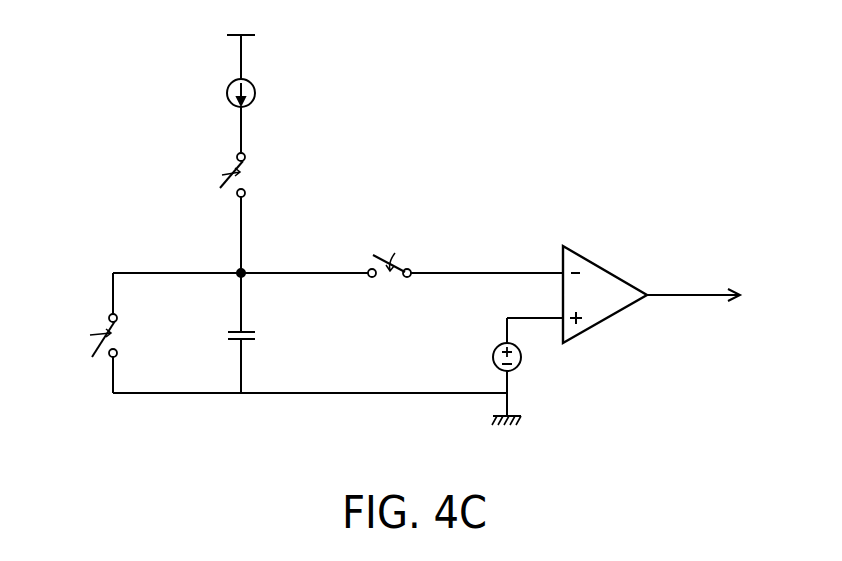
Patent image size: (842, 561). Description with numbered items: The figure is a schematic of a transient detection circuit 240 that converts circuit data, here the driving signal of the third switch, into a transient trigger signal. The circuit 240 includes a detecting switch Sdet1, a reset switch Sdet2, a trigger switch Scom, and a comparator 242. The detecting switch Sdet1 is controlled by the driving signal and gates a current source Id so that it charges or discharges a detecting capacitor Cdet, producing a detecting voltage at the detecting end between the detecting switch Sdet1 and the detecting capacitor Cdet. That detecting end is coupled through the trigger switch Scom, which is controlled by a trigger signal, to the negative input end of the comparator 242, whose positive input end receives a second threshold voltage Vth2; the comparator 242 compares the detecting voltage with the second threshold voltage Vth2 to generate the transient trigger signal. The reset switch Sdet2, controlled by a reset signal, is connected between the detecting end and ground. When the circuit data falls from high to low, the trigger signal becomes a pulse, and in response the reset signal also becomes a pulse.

The transient detection circuit 240 is at (110, 54).
The comparator 242 is at (608, 268).
The current source Id is at (225, 92).
The detecting switch Sdet1 is at (244, 175).
The reset switch Sdet2 is at (112, 335).
The detecting capacitor Cdet is at (270, 335).
The trigger switch Scom is at (391, 265).
The second threshold voltage Vth2 is at (476, 355).